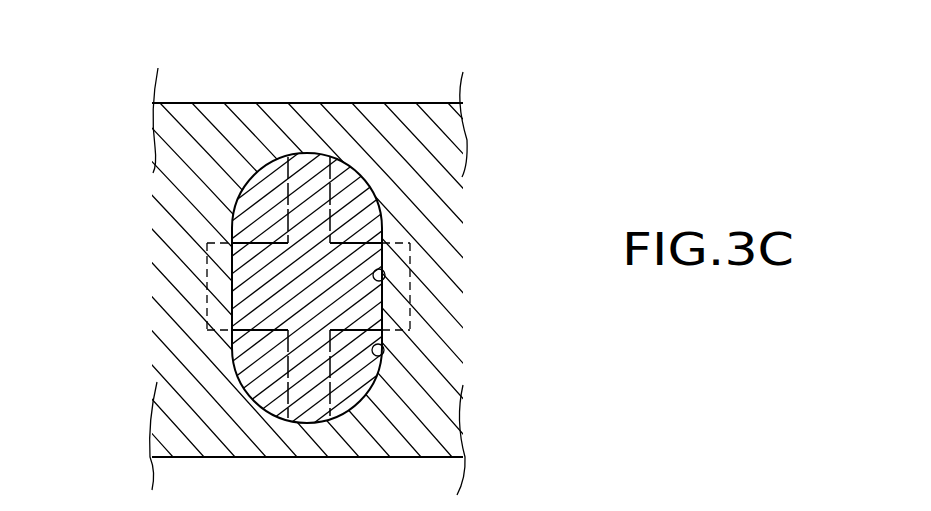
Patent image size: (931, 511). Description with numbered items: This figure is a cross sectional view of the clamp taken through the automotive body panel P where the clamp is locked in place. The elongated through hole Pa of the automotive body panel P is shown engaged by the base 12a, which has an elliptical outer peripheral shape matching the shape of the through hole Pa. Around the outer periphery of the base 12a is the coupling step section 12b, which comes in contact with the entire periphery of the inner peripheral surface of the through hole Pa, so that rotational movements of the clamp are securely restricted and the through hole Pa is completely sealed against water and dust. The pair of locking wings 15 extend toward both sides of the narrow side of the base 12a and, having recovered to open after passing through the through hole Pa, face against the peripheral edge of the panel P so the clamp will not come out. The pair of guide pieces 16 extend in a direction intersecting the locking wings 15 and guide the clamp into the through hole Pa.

The automotive body panel P is at (442, 188).
The through hole Pa is at (382, 278).
The base 12a is at (368, 228).
The coupling step section 12b is at (378, 357).
The locking wings 15 is at (212, 287).
The guide pieces 16 is at (318, 145).